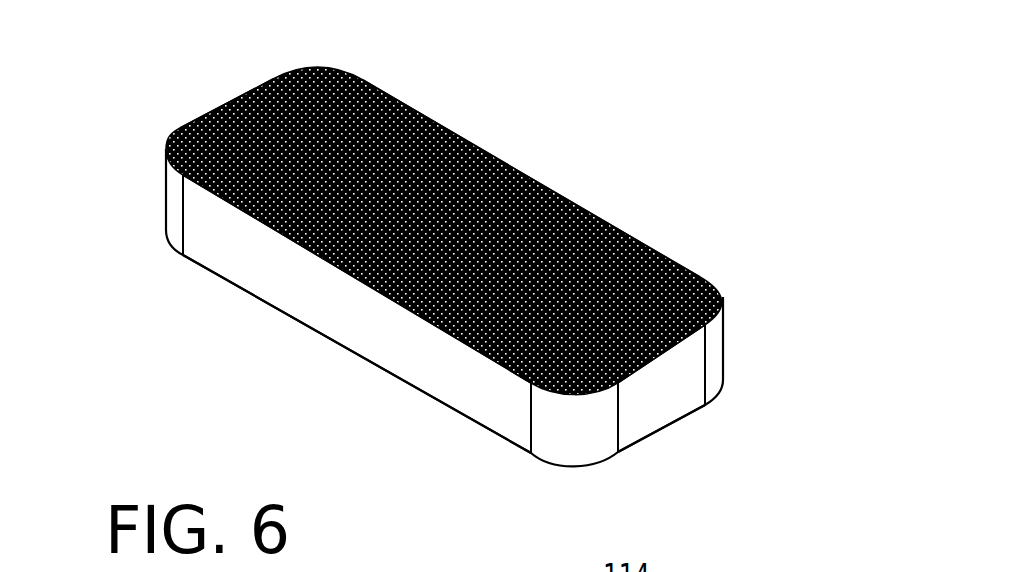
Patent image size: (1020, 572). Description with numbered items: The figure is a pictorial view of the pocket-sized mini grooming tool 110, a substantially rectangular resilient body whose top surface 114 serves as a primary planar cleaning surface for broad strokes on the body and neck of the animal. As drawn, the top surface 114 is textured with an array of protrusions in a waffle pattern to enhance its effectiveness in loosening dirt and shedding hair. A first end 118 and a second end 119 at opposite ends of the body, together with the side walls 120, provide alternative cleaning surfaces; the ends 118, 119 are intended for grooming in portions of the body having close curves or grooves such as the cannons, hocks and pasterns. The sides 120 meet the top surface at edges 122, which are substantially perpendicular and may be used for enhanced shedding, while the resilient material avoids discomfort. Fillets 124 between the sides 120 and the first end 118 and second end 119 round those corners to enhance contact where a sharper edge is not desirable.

The tool 110 is at (532, 133).
The top surface 114 is at (398, 102).
The first end 118 is at (665, 390).
The second end 119 is at (220, 103).
The side walls 120 is at (550, 190).
The edges 122 is at (320, 258).
The fillets 124 is at (170, 203).